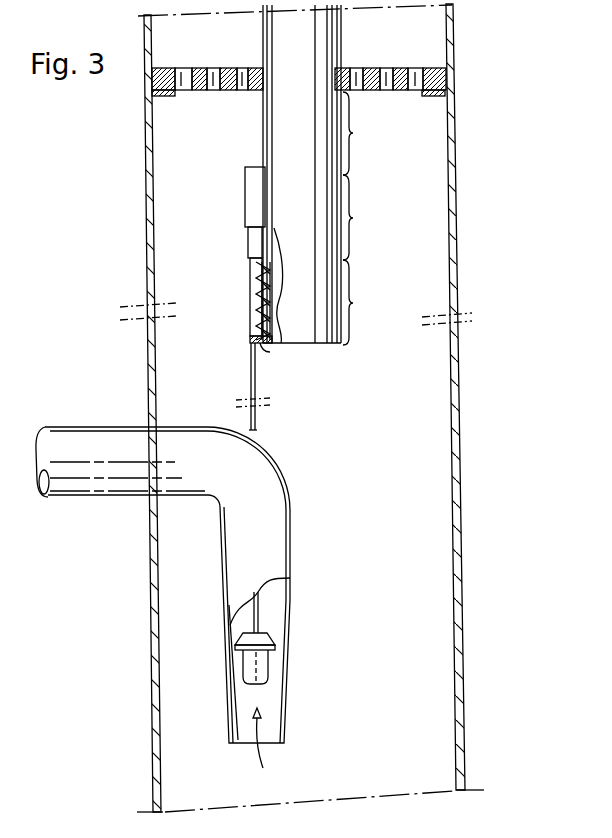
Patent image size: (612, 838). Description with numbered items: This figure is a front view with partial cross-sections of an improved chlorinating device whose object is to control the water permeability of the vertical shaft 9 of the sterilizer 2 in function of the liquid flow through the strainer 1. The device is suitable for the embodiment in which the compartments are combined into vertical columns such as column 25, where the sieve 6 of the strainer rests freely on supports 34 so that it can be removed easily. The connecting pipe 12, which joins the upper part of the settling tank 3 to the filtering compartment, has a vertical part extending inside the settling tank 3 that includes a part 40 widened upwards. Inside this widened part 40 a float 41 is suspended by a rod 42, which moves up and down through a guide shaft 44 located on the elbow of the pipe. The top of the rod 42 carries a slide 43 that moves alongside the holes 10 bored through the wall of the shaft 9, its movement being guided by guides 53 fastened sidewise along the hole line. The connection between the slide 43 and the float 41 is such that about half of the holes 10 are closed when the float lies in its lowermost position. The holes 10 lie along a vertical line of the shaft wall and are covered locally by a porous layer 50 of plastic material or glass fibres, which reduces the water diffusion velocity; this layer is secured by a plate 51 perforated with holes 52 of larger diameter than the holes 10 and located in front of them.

The strainer 1 is at (455, 150).
The sterilizer 2 is at (413, 295).
The settling tank 3 is at (425, 617).
The sieve 6 is at (447, 78).
The vertical shaft 9 is at (275, 110).
The holes 10 is at (255, 340).
The connecting pipe 12 is at (93, 447).
The vertical column 25 is at (460, 228).
The supports 34 is at (165, 93).
The widened part 40 is at (228, 648).
The float 41 is at (250, 672).
The rod 42 is at (250, 360).
The slide 43 is at (250, 247).
The guide shaft 44 is at (258, 440).
The porous layer 50 is at (258, 345).
The plate 51 is at (258, 283).
The holes 52 is at (258, 303).
The guides 53 is at (255, 178).